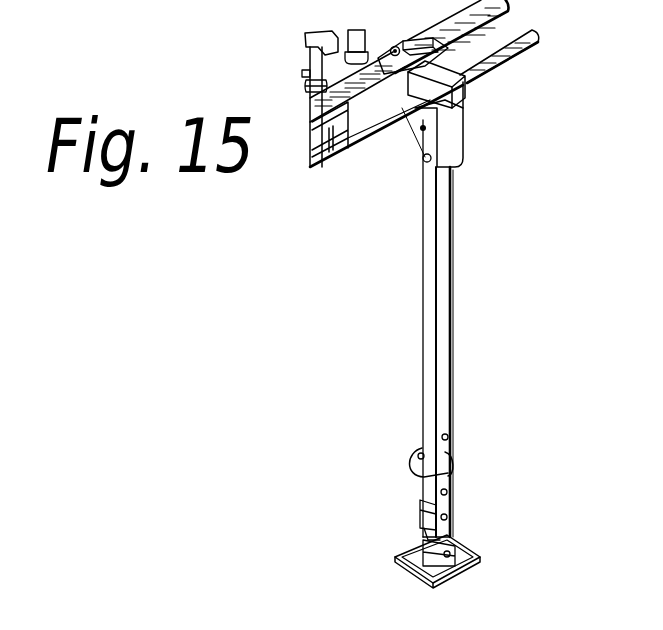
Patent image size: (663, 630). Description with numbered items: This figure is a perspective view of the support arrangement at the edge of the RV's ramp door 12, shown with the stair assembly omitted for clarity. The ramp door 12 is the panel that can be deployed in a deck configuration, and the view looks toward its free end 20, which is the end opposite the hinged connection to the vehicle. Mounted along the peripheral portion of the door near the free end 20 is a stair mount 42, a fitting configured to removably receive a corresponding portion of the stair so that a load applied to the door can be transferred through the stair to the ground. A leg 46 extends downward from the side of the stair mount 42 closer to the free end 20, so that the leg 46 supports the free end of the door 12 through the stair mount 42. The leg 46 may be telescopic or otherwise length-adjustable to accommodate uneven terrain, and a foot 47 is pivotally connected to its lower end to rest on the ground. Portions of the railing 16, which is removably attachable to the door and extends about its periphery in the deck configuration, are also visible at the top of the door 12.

The ramp door 12 is at (519, 34).
The railing 16 is at (306, 37).
The second end 20 is at (308, 176).
The stair mount 42 is at (467, 103).
The leg 46 is at (466, 380).
The foot 47 is at (478, 554).